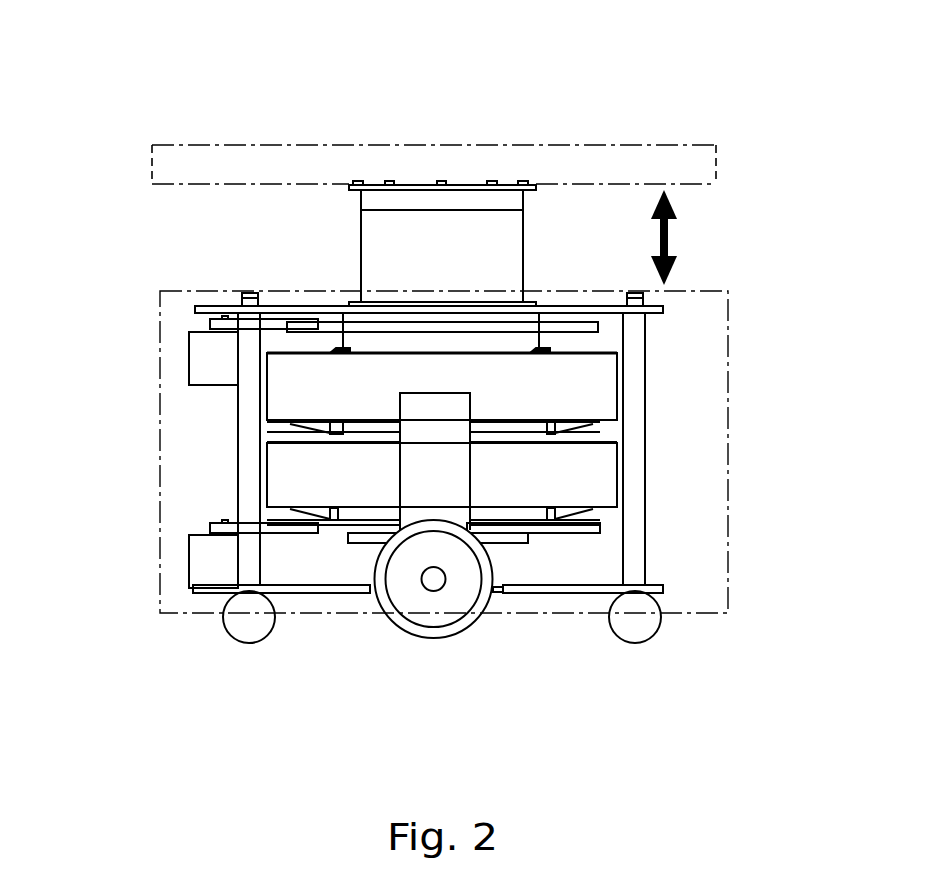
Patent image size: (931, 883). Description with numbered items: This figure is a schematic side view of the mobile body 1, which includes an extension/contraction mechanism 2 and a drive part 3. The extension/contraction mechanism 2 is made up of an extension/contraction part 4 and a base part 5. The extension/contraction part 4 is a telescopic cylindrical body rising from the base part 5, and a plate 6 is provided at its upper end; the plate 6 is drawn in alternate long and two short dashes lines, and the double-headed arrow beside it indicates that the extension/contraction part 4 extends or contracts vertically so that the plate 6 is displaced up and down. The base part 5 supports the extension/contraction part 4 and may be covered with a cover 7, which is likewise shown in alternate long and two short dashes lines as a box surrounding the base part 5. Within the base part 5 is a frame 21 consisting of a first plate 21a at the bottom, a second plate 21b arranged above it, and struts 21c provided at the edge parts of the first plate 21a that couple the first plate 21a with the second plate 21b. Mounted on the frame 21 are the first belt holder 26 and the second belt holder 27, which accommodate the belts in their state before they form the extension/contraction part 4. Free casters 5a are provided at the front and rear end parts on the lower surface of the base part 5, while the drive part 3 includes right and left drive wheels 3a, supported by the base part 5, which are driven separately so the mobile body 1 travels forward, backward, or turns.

The mobile body 1 is at (770, 33).
The extension/contraction mechanism 2 is at (168, 565).
The drive part 3 is at (455, 638).
The drive wheels 3a is at (440, 630).
The extension/contraction part 4 is at (373, 203).
The base part 5 is at (668, 555).
The free casters 5a is at (637, 623).
The plate 6 is at (690, 170).
The cover 7 is at (703, 428).
The frame 21 is at (230, 430).
The first plate 21a is at (590, 590).
The second plate 21b is at (663, 303).
The struts 21c is at (253, 480).
The first belt holder 26 is at (598, 485).
The second belt holder 27 is at (598, 372).